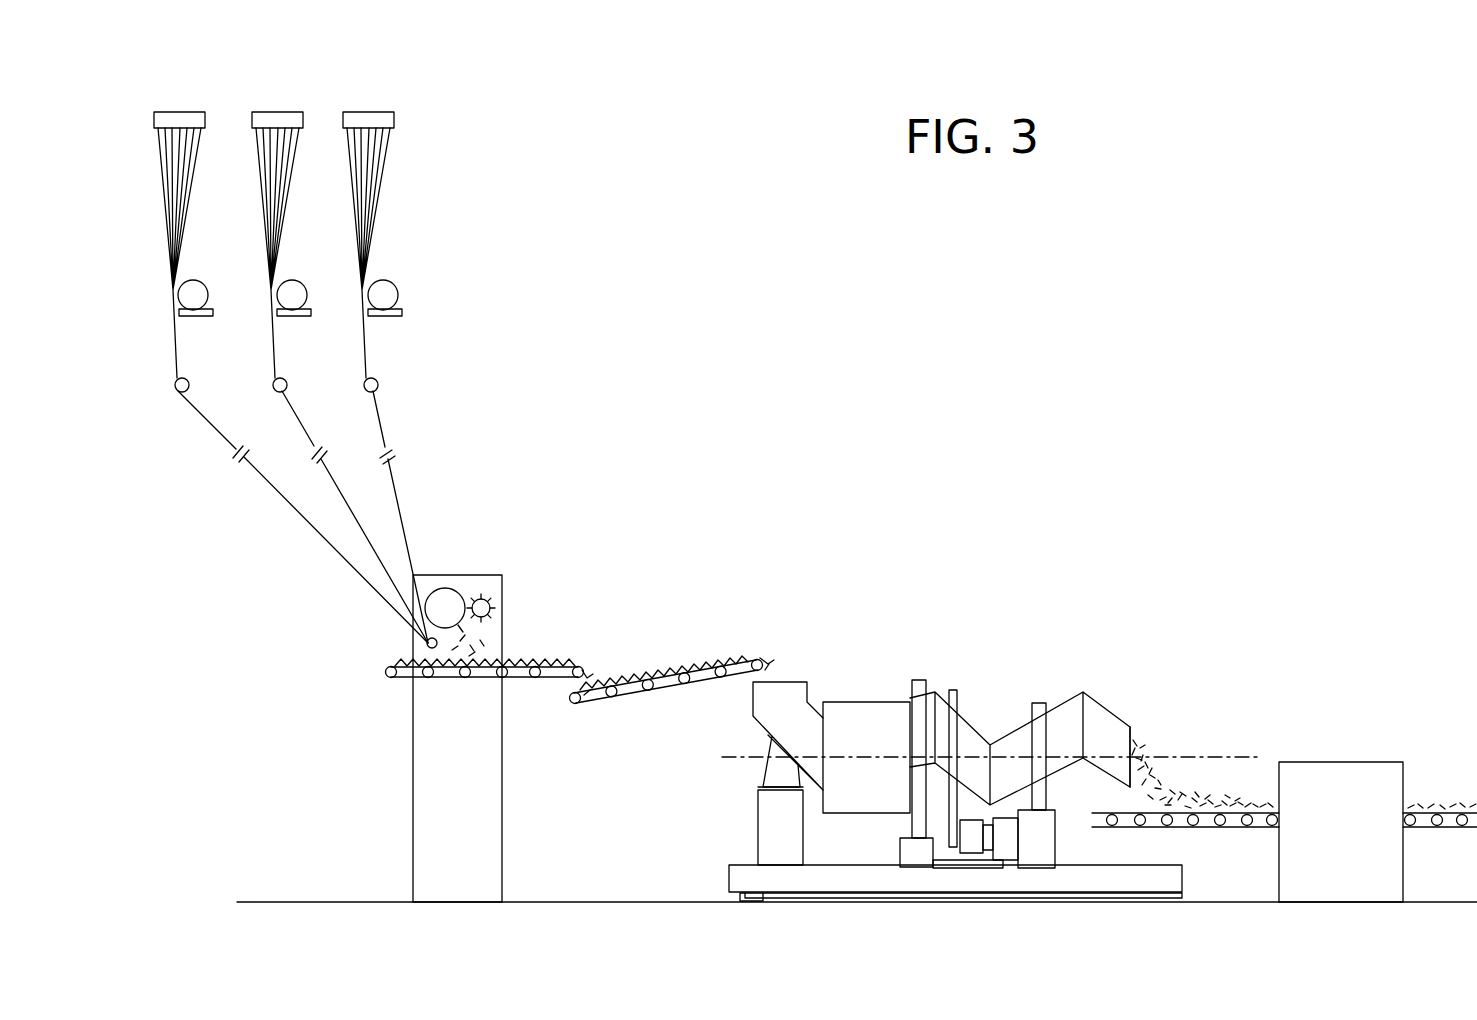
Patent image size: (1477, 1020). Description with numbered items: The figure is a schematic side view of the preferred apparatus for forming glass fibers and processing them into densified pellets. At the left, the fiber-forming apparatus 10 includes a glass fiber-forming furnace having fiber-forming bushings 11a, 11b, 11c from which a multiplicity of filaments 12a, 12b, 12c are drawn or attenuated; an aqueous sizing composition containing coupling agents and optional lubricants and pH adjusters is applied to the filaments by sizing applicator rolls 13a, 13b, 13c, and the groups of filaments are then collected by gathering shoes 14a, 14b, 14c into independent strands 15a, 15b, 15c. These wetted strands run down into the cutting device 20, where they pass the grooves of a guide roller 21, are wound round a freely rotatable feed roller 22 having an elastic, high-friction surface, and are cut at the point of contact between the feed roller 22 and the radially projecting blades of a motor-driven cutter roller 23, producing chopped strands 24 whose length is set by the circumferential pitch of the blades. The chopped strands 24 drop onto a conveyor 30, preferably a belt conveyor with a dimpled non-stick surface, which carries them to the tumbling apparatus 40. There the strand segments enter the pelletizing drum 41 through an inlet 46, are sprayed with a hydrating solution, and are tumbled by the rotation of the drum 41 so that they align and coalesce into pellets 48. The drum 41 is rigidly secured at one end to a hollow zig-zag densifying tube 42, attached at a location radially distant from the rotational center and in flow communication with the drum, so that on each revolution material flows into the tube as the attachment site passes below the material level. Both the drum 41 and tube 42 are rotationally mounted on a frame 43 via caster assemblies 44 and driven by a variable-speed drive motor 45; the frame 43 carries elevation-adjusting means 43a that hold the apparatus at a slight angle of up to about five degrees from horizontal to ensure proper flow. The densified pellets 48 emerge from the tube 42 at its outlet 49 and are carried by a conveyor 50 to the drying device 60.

The fiber-forming apparatus 10 is at (473, 103).
The fiber-forming bushing 11a is at (180, 114).
The fiber-forming bushing 11b is at (283, 114).
The fiber-forming bushing 11c is at (372, 114).
The filaments 12a is at (190, 206).
The filaments 12b is at (285, 213).
The filaments 12c is at (380, 200).
The sizing applicator roll 13a is at (202, 283).
The sizing applicator roll 13b is at (300, 283).
The sizing applicator roll 13c is at (393, 283).
The gathering shoe 14a is at (190, 383).
The gathering shoe 14b is at (288, 383).
The gathering shoe 14c is at (379, 383).
The strand 15a is at (217, 430).
The strand 15b is at (306, 436).
The strand 15c is at (390, 480).
The cutting device 20 is at (484, 568).
The guide roller 21 is at (426, 645).
The feed roller 22 is at (445, 588).
The cutter roller 23 is at (495, 603).
The chopped strands 24 is at (497, 657).
The conveyor 30 is at (640, 670).
The tumbling apparatus 40 is at (1040, 660).
The pelletizing drum 41 is at (858, 702).
The zig-zag densifying tube 42 is at (968, 730).
The frame 43 is at (727, 872).
The elevation-adjusting means 43a is at (730, 898).
The caster assemblies 44 is at (897, 850).
The drive motor 45 is at (1007, 822).
The inlet 46 is at (819, 706).
The pellets 48 is at (1143, 750).
The outlet 49 is at (1132, 735).
The conveyor 50 is at (1228, 800).
The drying device 60 is at (1330, 762).